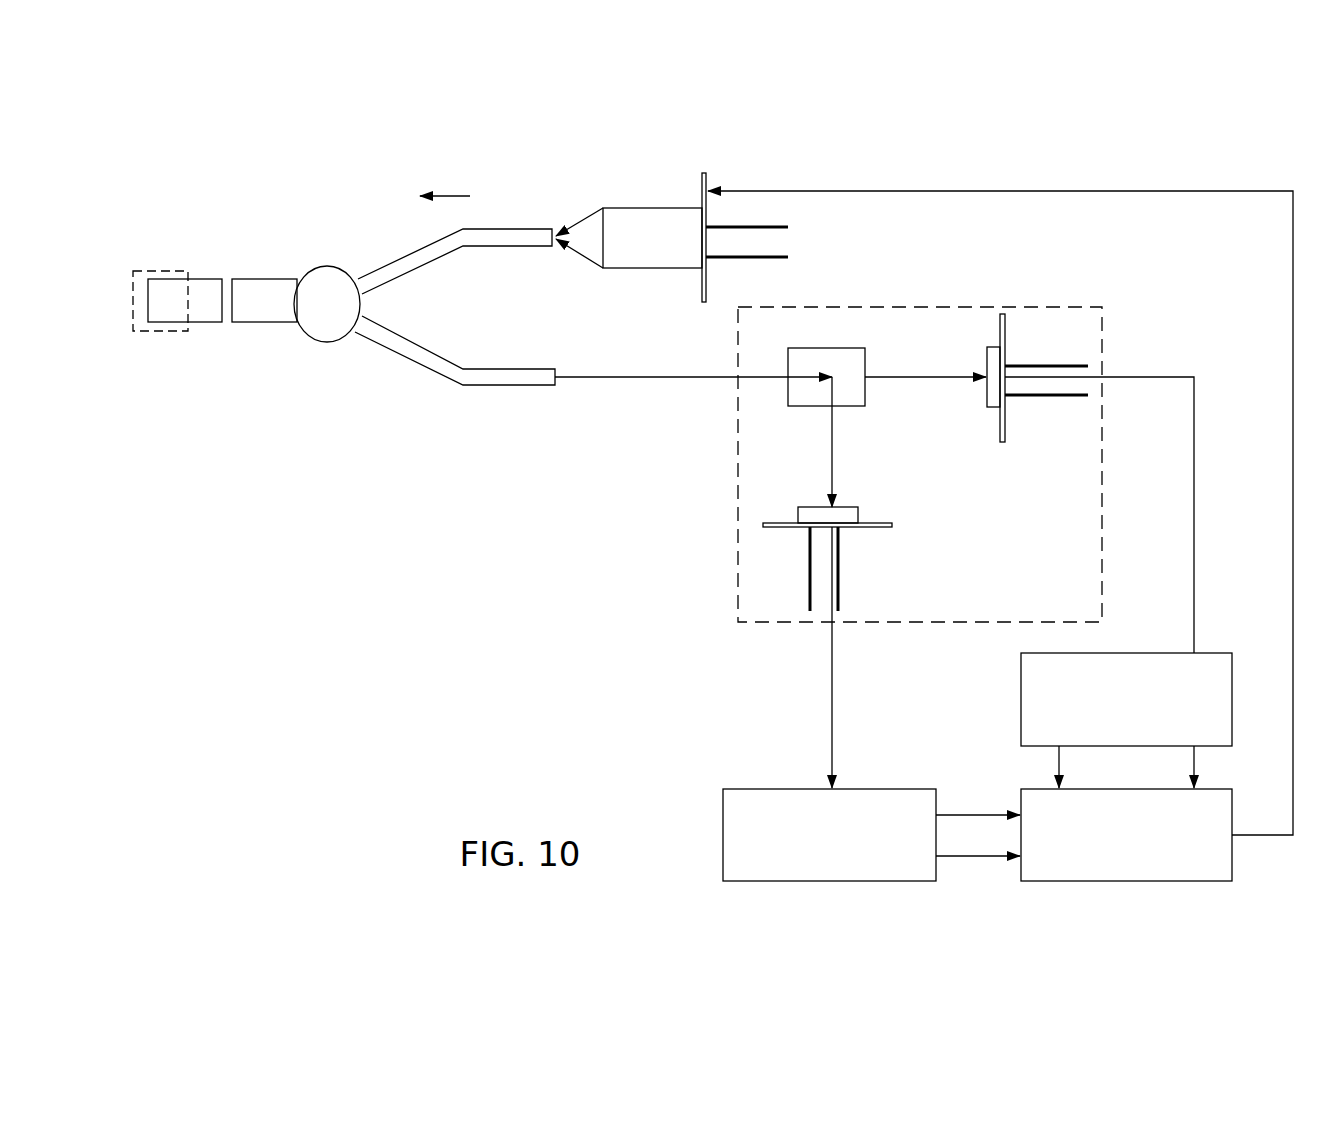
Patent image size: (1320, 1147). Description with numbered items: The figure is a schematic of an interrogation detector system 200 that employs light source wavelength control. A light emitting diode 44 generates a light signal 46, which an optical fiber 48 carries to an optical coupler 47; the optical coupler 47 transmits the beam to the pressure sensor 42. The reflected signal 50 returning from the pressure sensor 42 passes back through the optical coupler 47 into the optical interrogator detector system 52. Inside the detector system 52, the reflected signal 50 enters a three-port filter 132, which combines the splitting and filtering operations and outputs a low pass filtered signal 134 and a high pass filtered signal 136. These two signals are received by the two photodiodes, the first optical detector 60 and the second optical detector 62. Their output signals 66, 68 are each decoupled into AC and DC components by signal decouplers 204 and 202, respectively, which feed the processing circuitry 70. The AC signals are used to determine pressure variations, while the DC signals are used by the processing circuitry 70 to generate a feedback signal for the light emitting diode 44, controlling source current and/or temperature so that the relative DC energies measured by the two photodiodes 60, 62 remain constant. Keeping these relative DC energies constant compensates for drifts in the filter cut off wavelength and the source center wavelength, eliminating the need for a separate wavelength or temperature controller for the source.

The interrogation detector system 200 is at (252, 698).
The pressure sensor 42 is at (156, 268).
The light emitting diode 44 is at (652, 206).
The light signal 46 is at (451, 195).
The optical coupler 47 is at (322, 268).
The optical fiber 48 is at (400, 254).
The reflected signal 50 is at (622, 374).
The optical interrogator detector system 52 is at (954, 306).
The first optical detector 60 is at (1058, 366).
The second optical detector 62 is at (842, 583).
The output signal 66 is at (1160, 374).
The output signal 68 is at (834, 702).
The processing circuitry 70 is at (1234, 857).
The three-port filter 132 is at (811, 348).
The low pass filtered signal 134 is at (834, 441).
The high pass filtered signal 136 is at (922, 375).
The signal decoupler 202 is at (752, 787).
The signal decoupler 204 is at (1160, 652).